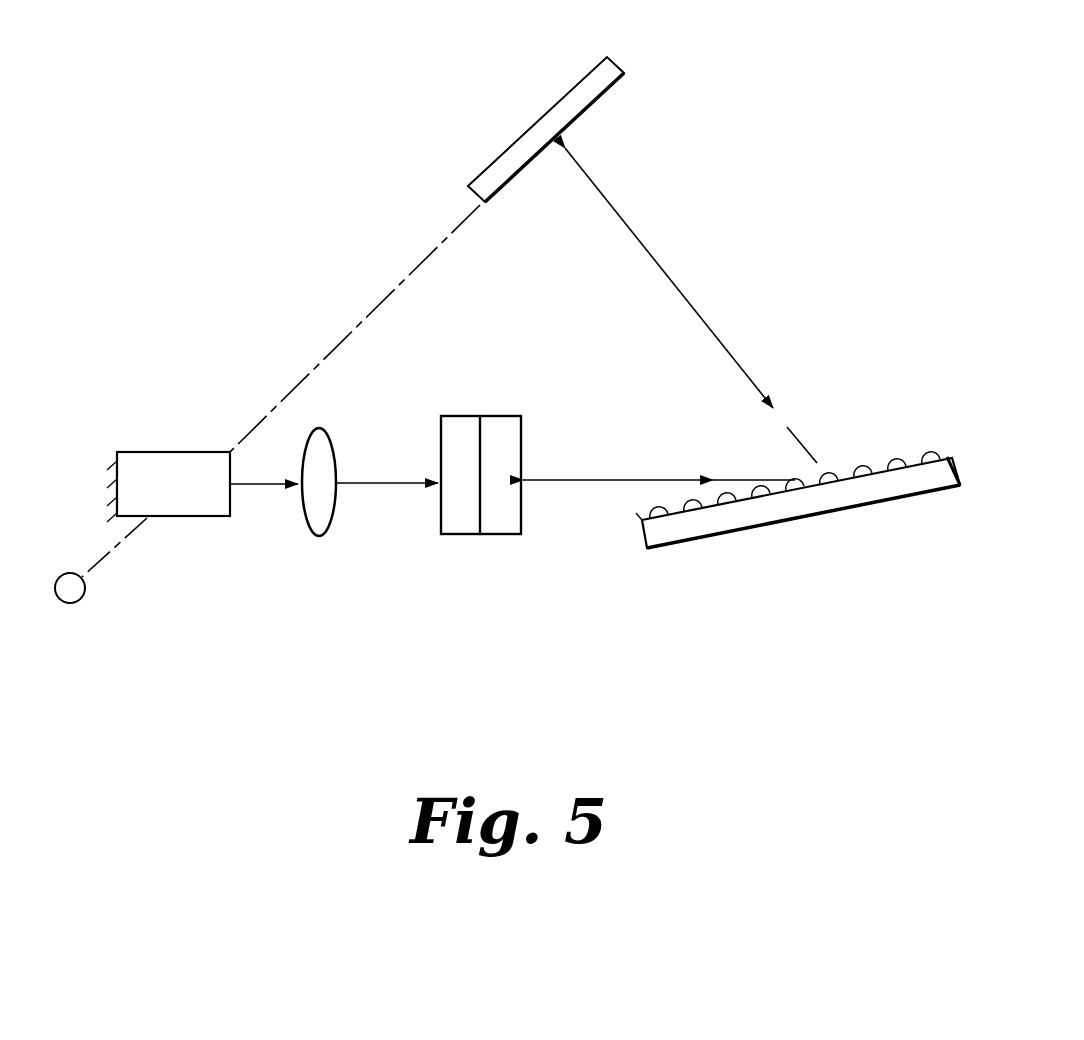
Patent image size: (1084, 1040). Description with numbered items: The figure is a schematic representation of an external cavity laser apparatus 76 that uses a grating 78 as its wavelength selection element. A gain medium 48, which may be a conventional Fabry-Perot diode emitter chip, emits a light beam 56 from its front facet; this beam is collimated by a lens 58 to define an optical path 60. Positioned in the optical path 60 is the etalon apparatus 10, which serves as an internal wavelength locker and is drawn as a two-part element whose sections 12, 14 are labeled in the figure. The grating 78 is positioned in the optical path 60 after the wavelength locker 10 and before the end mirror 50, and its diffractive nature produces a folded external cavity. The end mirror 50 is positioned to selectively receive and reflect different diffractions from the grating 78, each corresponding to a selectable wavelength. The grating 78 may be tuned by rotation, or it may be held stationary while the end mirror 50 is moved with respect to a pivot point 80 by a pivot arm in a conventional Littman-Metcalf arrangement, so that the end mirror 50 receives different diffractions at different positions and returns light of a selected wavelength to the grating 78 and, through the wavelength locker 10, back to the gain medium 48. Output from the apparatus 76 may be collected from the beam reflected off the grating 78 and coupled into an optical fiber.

The etalon apparatus 10 is at (550, 437).
The detector element 12 is at (460, 420).
The detector element 14 is at (500, 420).
The gain medium 48 is at (140, 455).
The end mirror 50 is at (607, 88).
The light beam 56 is at (390, 486).
The lens 58 is at (323, 445).
The optical path 60 is at (708, 325).
The external cavity laser apparatus 76 is at (862, 192).
The grating 78 is at (803, 517).
The pivot point 80 is at (82, 603).